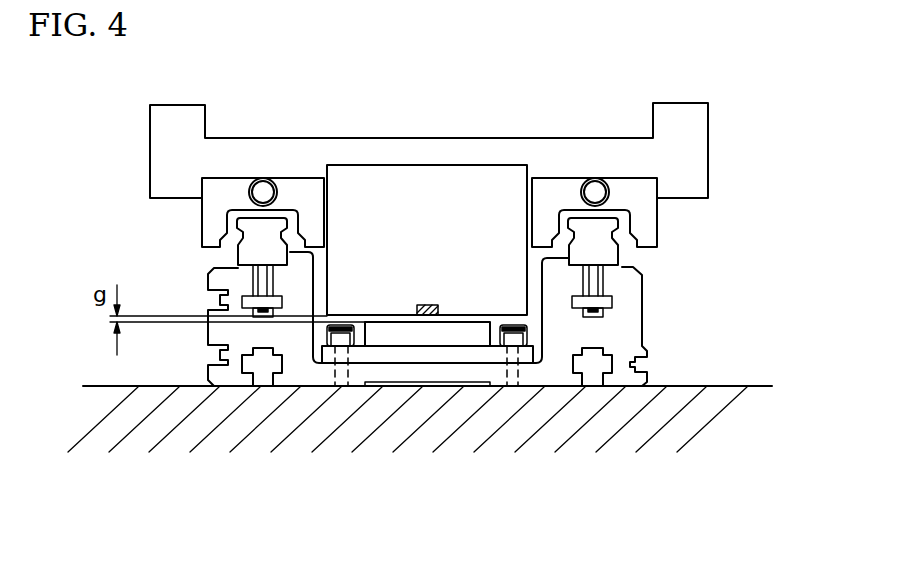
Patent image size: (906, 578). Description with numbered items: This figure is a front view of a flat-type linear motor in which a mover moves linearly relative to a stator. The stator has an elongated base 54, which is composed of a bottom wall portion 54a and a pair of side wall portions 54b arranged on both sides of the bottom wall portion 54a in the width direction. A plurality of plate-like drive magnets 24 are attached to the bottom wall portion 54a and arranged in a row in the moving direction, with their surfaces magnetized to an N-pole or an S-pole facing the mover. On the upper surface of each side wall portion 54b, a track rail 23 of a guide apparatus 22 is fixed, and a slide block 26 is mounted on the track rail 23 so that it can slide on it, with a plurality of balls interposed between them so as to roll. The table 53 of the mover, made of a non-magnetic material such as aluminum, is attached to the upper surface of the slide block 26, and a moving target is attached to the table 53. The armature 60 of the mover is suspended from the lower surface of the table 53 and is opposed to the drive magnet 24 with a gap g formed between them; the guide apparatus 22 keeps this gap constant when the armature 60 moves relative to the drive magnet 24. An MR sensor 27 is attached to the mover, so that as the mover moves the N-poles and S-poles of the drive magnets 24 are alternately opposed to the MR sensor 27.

The guide apparatus 22 is at (93, 187).
The track rail 23 is at (247, 254).
The drive magnet 24 is at (427, 335).
The slide block 26 is at (218, 210).
The MR sensor 27 is at (440, 306).
The table 53 is at (436, 150).
The base 54 is at (359, 386).
The bottom wall portion 54a is at (477, 375).
The side wall portion 54b is at (248, 335).
The armature 60 is at (486, 195).